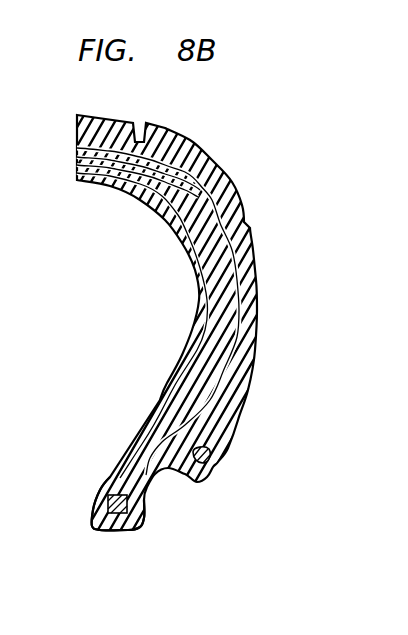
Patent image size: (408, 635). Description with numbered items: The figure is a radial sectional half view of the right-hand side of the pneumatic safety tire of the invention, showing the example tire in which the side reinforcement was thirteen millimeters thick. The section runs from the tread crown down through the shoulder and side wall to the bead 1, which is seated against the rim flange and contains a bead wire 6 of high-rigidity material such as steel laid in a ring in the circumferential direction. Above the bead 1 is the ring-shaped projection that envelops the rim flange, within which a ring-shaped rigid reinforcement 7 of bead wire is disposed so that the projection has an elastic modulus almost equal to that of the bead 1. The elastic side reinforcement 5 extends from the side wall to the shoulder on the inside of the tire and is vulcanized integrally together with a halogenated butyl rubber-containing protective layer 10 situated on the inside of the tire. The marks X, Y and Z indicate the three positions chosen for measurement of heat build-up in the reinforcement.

The bead 1 is at (90, 516).
The side reinforcement 5 is at (222, 342).
The bead wire 6 is at (139, 520).
The rigid reinforcement 7 is at (215, 466).
The protective layer 10 is at (171, 386).
The measurement position X is at (191, 233).
The measurement position Y is at (207, 272).
The measurement position Z is at (201, 326).